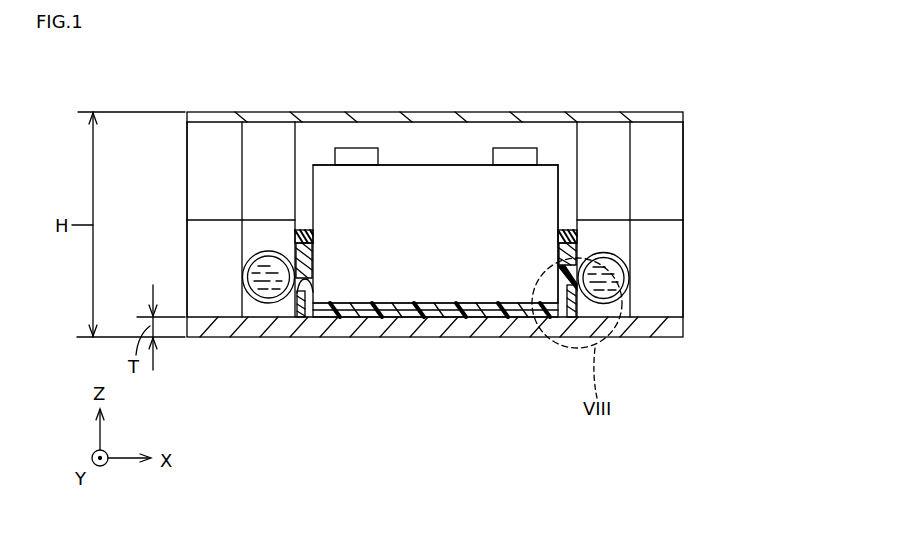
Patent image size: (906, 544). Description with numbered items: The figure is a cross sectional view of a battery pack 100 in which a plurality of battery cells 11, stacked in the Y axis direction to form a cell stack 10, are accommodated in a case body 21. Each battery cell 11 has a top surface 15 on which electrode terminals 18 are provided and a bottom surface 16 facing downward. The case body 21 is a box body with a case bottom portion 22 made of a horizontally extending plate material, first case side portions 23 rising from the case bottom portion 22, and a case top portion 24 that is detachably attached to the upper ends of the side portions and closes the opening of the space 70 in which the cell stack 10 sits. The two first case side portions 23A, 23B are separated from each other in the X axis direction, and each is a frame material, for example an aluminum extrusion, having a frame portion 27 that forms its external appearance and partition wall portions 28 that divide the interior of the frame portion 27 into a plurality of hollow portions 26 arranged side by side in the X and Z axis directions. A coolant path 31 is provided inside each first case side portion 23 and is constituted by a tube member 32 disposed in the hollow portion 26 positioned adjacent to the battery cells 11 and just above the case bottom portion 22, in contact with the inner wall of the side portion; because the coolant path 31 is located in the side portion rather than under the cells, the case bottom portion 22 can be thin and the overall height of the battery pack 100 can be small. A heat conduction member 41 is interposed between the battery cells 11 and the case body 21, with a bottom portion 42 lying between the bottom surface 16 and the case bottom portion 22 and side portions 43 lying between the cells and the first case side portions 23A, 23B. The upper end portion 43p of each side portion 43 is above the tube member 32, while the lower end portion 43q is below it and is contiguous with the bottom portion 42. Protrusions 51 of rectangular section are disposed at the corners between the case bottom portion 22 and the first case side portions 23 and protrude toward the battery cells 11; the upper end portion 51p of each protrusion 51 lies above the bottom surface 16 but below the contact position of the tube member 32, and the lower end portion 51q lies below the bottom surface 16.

The battery pack 100 is at (177, 79).
The cell stack 10 is at (323, 152).
The battery cell 11 is at (562, 161).
The top surface 15 is at (398, 163).
The bottom surface 16 is at (413, 307).
The electrode terminal 18 is at (355, 158).
The case body 21 is at (664, 108).
The case bottom portion 22 is at (447, 325).
The first case side portion 23 is at (443, 219).
The first case side portion 23A is at (184, 164).
The first case side portion 23B is at (685, 162).
The case top portion 24 is at (462, 120).
The hollow portion 26 is at (604, 148).
The frame portion 27 is at (187, 260).
The partition wall portion 28 is at (242, 157).
The coolant path 31 is at (263, 300).
The tube member 32 is at (245, 298).
The heat conduction member 41 is at (380, 310).
The bottom portion 42 is at (483, 312).
The side portion 43 is at (300, 245).
The upper end portion 43p is at (567, 230).
The lower end portion 43q is at (560, 282).
The protrusion 51 is at (293, 300).
The upper end portion 51p is at (312, 292).
The lower end portion 51q is at (297, 318).
The space 70 is at (432, 148).